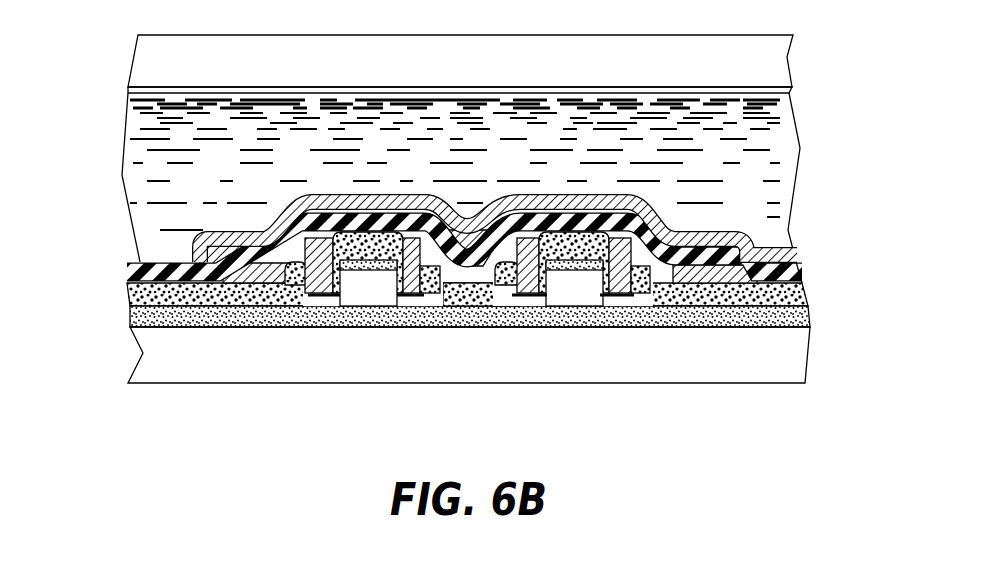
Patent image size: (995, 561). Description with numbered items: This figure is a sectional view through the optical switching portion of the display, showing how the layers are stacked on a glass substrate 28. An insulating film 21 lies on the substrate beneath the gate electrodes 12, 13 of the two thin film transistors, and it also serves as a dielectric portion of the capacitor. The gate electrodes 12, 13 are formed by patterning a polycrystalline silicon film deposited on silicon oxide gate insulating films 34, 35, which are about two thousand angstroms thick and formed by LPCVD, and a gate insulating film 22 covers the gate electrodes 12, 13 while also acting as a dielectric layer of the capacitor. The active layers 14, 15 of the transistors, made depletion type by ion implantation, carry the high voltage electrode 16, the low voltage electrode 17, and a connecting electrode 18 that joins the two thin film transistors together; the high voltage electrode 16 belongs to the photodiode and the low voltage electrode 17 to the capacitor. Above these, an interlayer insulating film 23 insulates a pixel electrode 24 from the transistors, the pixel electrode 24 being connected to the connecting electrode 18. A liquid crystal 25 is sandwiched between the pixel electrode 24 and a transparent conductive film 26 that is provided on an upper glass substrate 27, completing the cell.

The gate electrode 12 is at (372, 284).
The gate electrode 13 is at (578, 268).
The active layer 14 is at (395, 272).
The active layer 15 is at (622, 290).
The high voltage electrode 16 is at (252, 283).
The low voltage electrode 17 is at (688, 283).
The connecting electrode 18 is at (469, 300).
The insulating film 21 is at (790, 317).
The gate insulating film 22 is at (805, 297).
The interlayer insulating film 23 is at (798, 272).
The pixel electrode 24 is at (747, 232).
The liquid crystal 25 is at (777, 157).
The transparent conductive film 26 is at (775, 96).
The glass substrate 27 is at (763, 56).
The glass substrate 28 is at (742, 362).
The gate insulating film 34 is at (411, 275).
The gate insulating film 35 is at (512, 286).